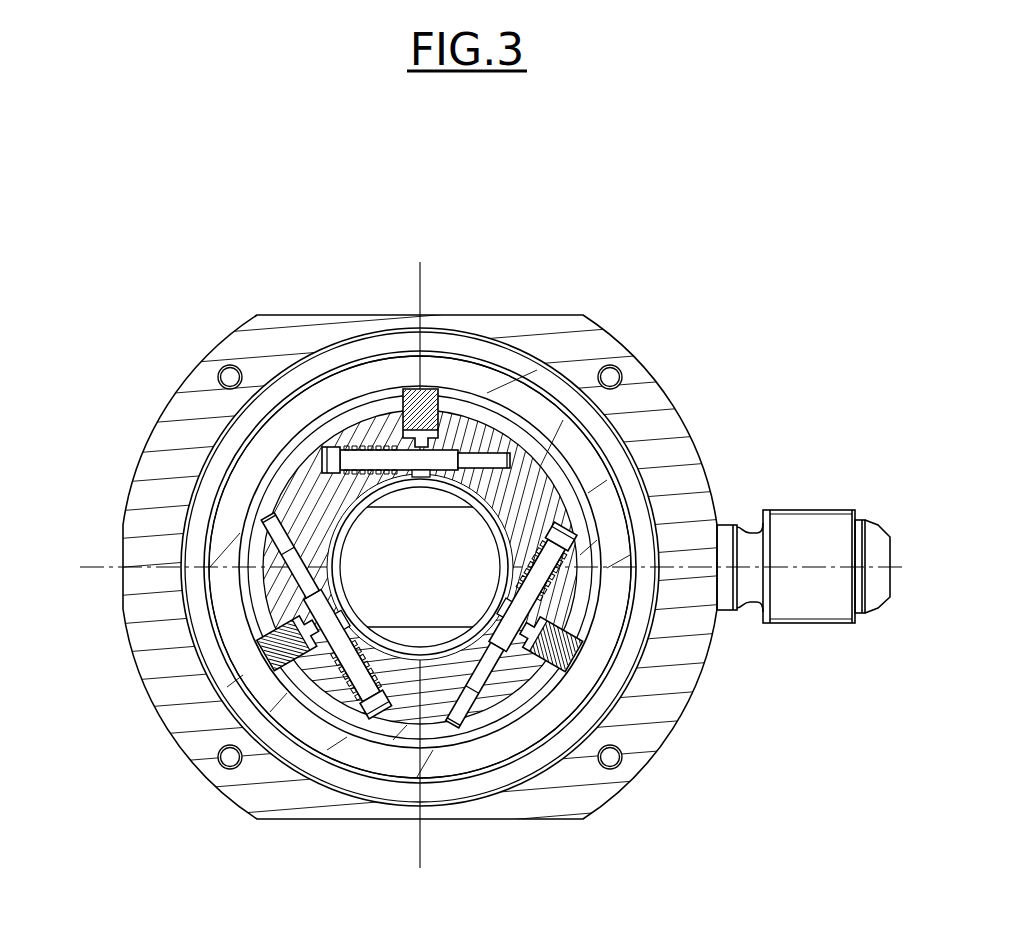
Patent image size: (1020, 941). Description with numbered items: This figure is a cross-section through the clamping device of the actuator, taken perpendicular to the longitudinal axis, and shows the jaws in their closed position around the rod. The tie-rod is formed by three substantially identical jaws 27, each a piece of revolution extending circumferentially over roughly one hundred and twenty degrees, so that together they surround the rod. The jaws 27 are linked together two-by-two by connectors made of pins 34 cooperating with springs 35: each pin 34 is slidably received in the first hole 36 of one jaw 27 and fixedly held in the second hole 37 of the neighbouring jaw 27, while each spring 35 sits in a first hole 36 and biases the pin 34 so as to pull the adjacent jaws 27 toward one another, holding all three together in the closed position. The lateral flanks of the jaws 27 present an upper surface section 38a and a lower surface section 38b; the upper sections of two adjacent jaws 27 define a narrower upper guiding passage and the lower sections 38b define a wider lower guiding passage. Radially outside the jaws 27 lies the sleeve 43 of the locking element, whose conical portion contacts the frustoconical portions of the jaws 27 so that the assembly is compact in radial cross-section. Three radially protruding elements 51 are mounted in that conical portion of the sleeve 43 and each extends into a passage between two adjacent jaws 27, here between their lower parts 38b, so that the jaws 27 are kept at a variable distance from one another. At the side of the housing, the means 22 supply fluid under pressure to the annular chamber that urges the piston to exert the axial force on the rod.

The means for supplying fluid under pressure 22 is at (863, 527).
The jaw 27 is at (290, 511).
The pin 34 is at (333, 455).
The spring 35 is at (383, 443).
The first hole 36 is at (320, 462).
The second hole 37 is at (520, 462).
The upper surface section 38a is at (317, 648).
The lower surface section 38b is at (330, 655).
The sleeve 43 is at (517, 393).
The radially protruding element 51 is at (428, 402).